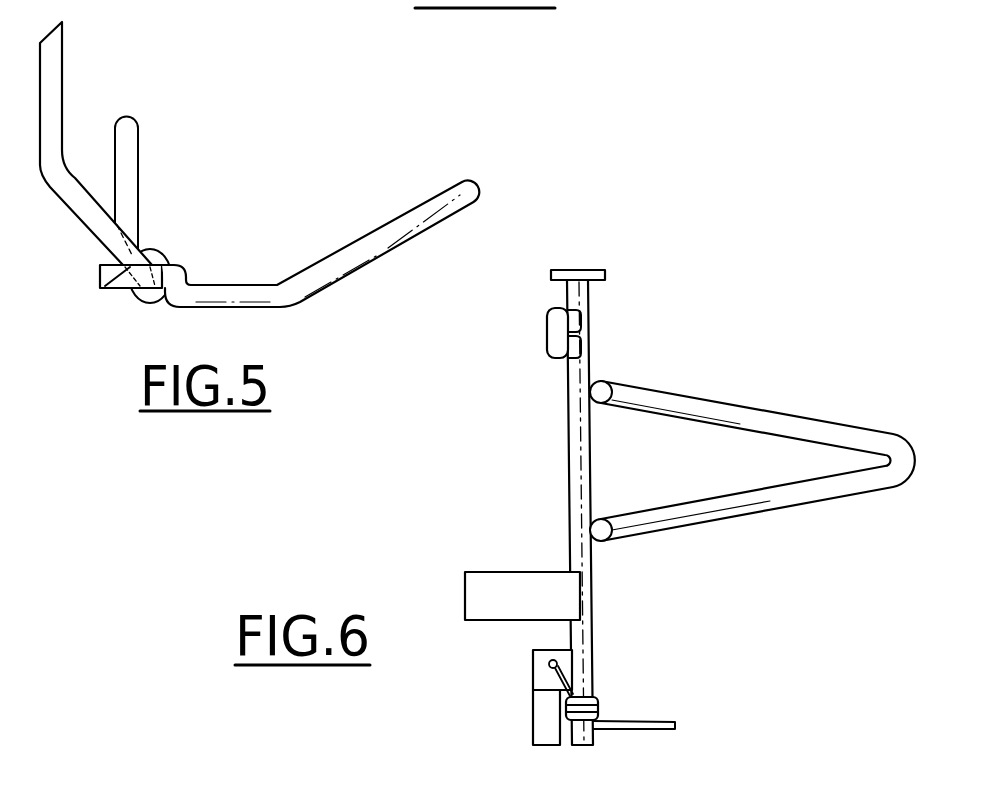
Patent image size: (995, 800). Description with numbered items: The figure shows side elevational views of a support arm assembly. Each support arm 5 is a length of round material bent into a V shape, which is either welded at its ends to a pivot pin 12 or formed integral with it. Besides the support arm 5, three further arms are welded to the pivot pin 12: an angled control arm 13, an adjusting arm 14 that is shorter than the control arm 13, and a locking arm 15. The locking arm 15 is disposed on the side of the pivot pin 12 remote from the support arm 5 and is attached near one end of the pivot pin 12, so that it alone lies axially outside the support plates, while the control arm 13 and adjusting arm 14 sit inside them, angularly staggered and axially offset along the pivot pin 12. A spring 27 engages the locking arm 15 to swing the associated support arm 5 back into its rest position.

In FIG. 5, the support arm 5 is at (395, 223).
In FIG. 6, the support arm 5 is at (793, 500).
In FIG. 6, the pivot pin 12 is at (570, 448).
In FIG. 5, the control arm 13 is at (58, 70).
In FIG. 6, the control arm 13 is at (492, 572).
In FIG. 5, the adjusting arm 14 is at (132, 170).
In FIG. 6, the adjusting arm 14 is at (547, 330).
In FIG. 5, the locking arm 15 is at (122, 288).
In FIG. 6, the locking arm 15 is at (537, 708).
In FIG. 6, the spring 27 is at (596, 700).